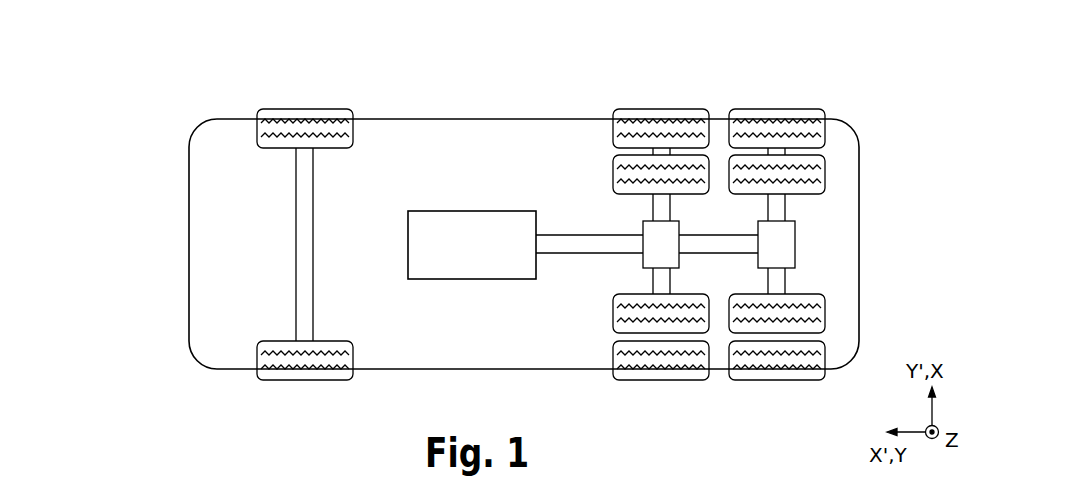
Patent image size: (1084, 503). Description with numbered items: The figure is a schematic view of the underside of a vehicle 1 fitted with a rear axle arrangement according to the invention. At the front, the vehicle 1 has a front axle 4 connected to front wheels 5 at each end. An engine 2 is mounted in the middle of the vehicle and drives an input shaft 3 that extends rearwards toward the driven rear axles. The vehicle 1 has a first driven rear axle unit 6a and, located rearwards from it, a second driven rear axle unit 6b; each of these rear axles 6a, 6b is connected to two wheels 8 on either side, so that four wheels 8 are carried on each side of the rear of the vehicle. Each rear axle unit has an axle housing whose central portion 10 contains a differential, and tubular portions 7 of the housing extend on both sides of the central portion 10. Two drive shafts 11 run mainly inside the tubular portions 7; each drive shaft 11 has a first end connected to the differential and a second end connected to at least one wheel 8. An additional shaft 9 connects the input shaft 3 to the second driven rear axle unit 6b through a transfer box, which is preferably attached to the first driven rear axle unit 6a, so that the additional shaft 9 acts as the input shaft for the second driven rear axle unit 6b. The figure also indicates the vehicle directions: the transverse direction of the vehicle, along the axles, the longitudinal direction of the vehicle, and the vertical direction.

The vehicle 1 is at (170, 222).
The engine 2 is at (465, 228).
The input shaft 3 is at (582, 245).
The front axle 4 is at (300, 315).
The front wheels 5 is at (303, 130).
The first driven rear axle unit 6a is at (663, 93).
The second driven rear axle unit 6b is at (780, 91).
The tubular portions 7 is at (667, 210).
The wheels 8 is at (754, 219).
The additional shaft 9 is at (739, 243).
The central portion 10 is at (653, 230).
The drive shafts 11 is at (658, 278).